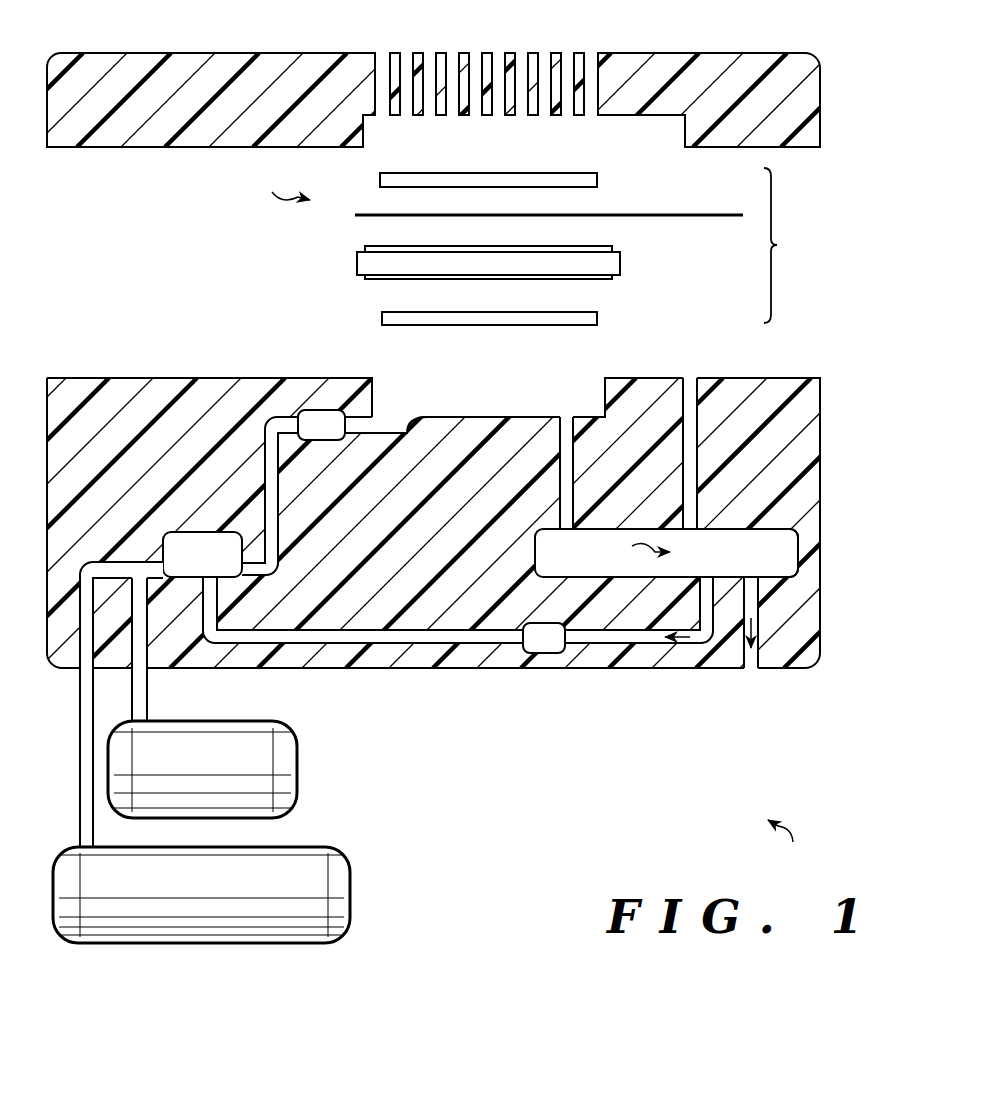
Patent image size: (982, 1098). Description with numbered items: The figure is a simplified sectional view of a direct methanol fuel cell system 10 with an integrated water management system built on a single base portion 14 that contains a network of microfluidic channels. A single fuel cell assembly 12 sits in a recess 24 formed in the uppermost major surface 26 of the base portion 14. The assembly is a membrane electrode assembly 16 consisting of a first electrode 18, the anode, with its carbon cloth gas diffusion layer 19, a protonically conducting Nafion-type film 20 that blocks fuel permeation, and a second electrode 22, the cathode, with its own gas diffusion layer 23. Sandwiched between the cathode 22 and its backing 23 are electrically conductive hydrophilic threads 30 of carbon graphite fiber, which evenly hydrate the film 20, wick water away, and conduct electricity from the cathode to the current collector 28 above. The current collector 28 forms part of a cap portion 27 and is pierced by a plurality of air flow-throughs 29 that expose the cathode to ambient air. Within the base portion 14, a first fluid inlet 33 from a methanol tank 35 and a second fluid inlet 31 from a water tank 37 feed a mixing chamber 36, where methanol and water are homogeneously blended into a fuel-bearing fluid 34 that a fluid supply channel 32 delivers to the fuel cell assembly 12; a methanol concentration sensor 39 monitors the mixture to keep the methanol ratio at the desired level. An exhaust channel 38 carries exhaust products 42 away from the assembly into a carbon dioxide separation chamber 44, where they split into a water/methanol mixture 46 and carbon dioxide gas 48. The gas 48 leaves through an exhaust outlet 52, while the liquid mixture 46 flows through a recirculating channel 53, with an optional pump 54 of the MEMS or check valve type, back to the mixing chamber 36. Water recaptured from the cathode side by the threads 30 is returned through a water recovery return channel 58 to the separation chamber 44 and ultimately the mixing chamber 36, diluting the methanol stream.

The fuel cell system 10 is at (790, 848).
The fuel cell assembly 12 is at (276, 184).
The base portion 14 is at (70, 350).
The fuel cell membrane electrode assembly 16 is at (787, 245).
The first electrode 18 is at (361, 279).
The gas diffusion layer 19 is at (597, 320).
The film 20 is at (620, 263).
The second electrode 22 is at (365, 247).
The gas diffusion layer 23 is at (597, 181).
The recess 24 is at (420, 384).
The uppermost major surface 26 is at (168, 377).
The cap portion 27 is at (70, 176).
The current collector 28 is at (717, 52).
The air flow-throughs 29 is at (547, 52).
The electrically conductive hydrophilic threads 30 is at (700, 213).
The second fluid inlet 31 is at (147, 693).
The fluid supply channel 32 is at (265, 519).
The first fluid inlet 33 is at (80, 712).
The fuel-bearing fluid 34 is at (272, 478).
The methanol tank 35 is at (350, 890).
The mixing chamber 36 is at (218, 570).
The water tank 37 is at (297, 765).
The exhaust channel 38 is at (566, 417).
The methanol concentration sensor 39 is at (323, 411).
The exhaust products 42 is at (666, 553).
The carbon dioxide separation chamber 44 is at (787, 560).
The water/methanol mixture 46 is at (686, 655).
The carbon dioxide gas 48 is at (760, 627).
The exhaust outlet 52 is at (751, 670).
The recirculating channel 53 is at (600, 645).
The pump 54 is at (543, 654).
The water recovery return channel 58 is at (690, 378).